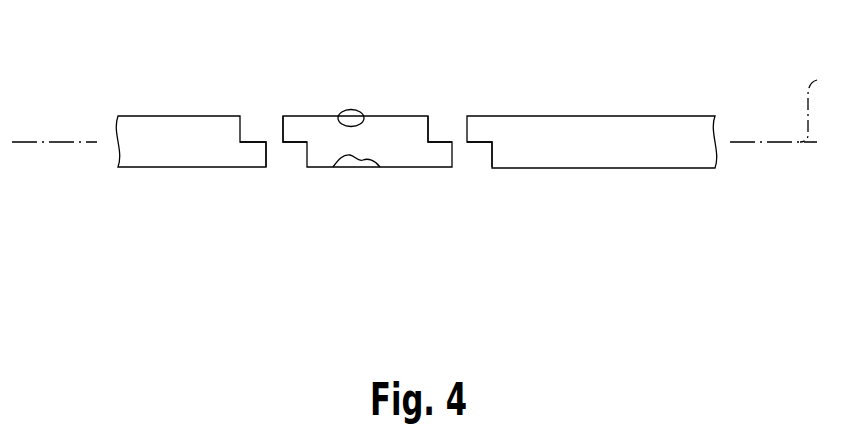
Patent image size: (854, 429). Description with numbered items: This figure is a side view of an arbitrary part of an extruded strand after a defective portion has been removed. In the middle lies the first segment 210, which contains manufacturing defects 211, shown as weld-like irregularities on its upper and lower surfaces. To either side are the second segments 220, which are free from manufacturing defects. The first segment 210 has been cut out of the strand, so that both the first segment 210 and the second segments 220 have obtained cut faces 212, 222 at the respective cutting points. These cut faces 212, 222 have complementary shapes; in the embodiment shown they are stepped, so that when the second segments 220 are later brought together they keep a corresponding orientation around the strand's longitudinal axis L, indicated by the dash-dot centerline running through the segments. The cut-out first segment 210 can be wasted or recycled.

The first segment 210 is at (341, 90).
The manufacturing defects 211 is at (358, 116).
The cut faces 212 is at (281, 123).
The second segments 220 is at (174, 112).
The cut faces 222 is at (266, 157).
The longitudinal axis L is at (424, 106).